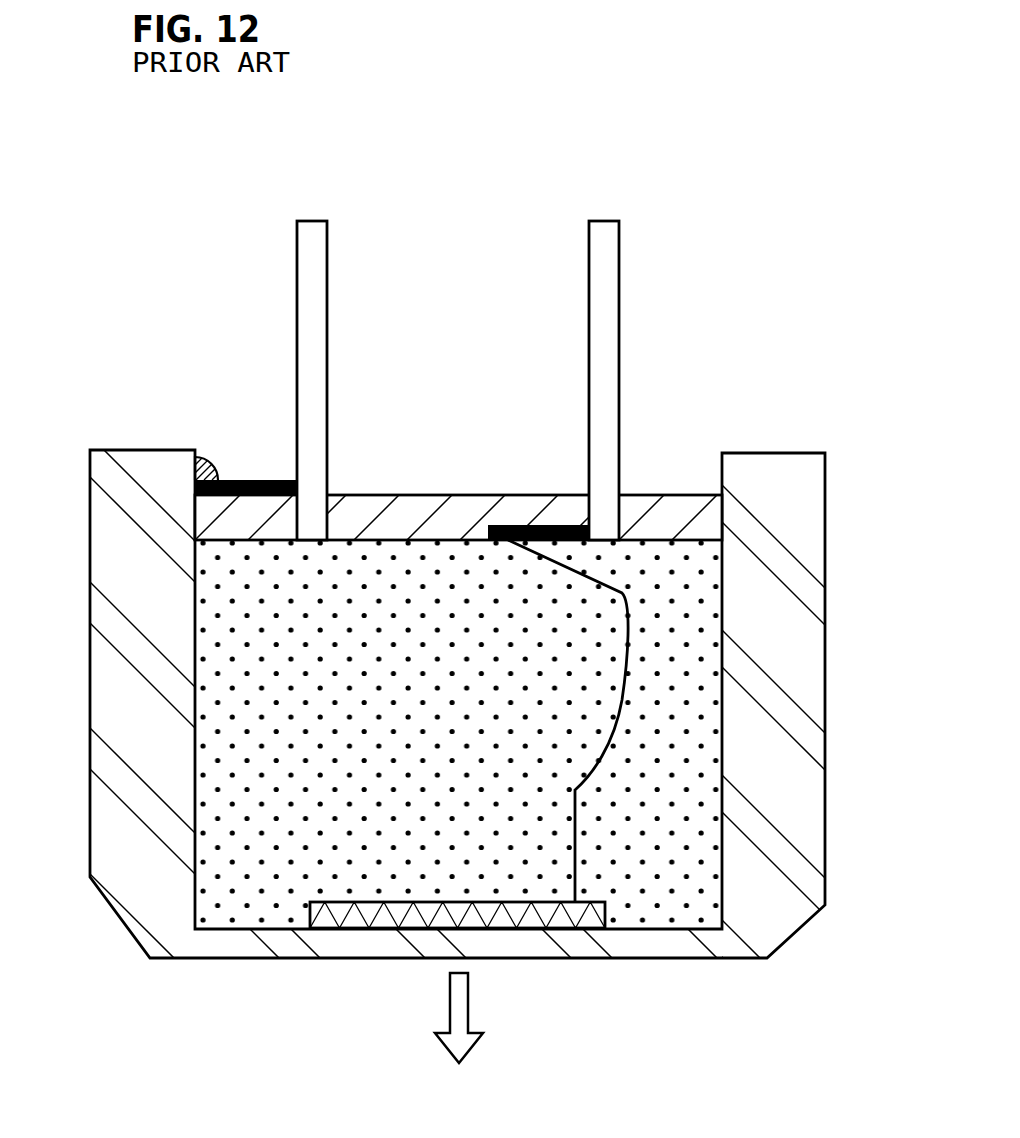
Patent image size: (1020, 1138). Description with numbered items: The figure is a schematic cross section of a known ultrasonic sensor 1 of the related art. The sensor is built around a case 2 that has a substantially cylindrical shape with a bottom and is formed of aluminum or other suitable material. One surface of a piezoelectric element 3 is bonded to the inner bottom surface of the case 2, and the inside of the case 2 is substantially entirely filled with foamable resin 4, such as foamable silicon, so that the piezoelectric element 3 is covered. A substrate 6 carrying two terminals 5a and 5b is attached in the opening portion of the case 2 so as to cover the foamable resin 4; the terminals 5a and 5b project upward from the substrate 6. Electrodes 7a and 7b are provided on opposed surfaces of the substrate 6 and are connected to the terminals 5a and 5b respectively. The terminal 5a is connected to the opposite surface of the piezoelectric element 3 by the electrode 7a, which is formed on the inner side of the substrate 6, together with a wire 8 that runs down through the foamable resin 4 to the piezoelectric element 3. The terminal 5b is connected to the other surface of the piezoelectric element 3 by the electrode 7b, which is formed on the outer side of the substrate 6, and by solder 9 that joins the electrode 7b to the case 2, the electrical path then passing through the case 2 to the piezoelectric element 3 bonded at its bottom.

The ultrasonic sensor 1 is at (65, 163).
The case 2 is at (798, 806).
The piezoelectric element 3 is at (526, 925).
The foamable resin 4 is at (215, 745).
The terminal 5a is at (611, 270).
The terminal 5b is at (305, 262).
The substrate 6 is at (413, 505).
The electrode 7a is at (514, 525).
The electrode 7b is at (263, 478).
The wire 8 is at (626, 633).
The solder 9 is at (218, 462).